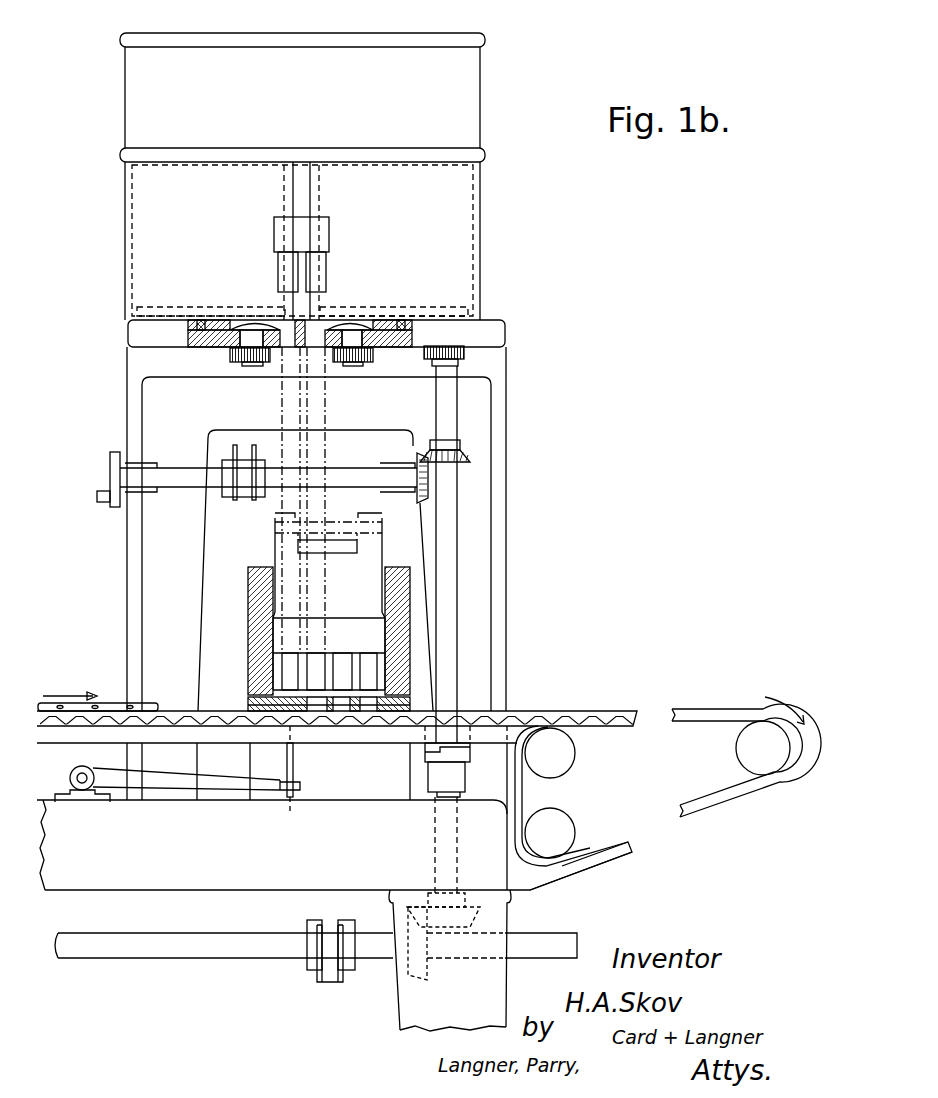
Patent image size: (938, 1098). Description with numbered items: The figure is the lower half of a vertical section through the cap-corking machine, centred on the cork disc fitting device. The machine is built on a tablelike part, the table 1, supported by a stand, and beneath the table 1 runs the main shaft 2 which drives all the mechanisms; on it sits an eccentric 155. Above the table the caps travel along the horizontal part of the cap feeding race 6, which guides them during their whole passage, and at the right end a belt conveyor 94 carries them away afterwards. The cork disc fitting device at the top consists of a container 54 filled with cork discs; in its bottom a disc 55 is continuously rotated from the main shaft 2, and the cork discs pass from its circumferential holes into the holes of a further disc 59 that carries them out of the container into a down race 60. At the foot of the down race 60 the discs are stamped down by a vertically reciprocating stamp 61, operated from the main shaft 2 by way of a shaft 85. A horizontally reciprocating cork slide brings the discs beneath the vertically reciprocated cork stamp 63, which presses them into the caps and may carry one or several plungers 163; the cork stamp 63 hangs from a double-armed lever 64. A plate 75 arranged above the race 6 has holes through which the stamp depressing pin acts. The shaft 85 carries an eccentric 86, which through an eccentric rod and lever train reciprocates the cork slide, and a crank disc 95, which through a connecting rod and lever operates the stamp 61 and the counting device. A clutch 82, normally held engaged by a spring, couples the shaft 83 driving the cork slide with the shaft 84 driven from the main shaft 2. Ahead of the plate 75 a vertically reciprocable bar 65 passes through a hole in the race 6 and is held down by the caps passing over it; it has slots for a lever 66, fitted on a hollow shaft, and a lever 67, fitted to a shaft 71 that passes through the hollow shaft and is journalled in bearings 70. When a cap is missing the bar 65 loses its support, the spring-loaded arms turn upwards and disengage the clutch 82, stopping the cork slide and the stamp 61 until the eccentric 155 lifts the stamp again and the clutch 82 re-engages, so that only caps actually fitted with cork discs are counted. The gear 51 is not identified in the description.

The container 54 is at (483, 207).
The disc 55 is at (180, 312).
The down race 60 is at (274, 232).
The stamp 61 is at (329, 232).
The gear 51 is at (232, 318).
The disc 59 is at (333, 318).
The shaft 83 is at (460, 568).
The shaft 85 is at (355, 468).
The eccentric 86 is at (245, 445).
The crank disc 95 is at (110, 452).
The cork stamp 63 is at (380, 632).
The double-armed lever 64 is at (345, 546).
The plungers 163 is at (372, 662).
The plate 75 is at (257, 695).
The cap feeding race 6 is at (371, 740).
The clutch 82 is at (465, 756).
The shaft 84 is at (440, 798).
The shaft 71 is at (77, 771).
The bearings 70 is at (80, 804).
The lever 66 is at (205, 764).
The lever 67 is at (196, 772).
The bar 65 is at (297, 765).
The table 1 is at (334, 845).
The main shaft 2 is at (257, 933).
The eccentric 155 is at (330, 982).
The belt conveyor 94 is at (713, 709).